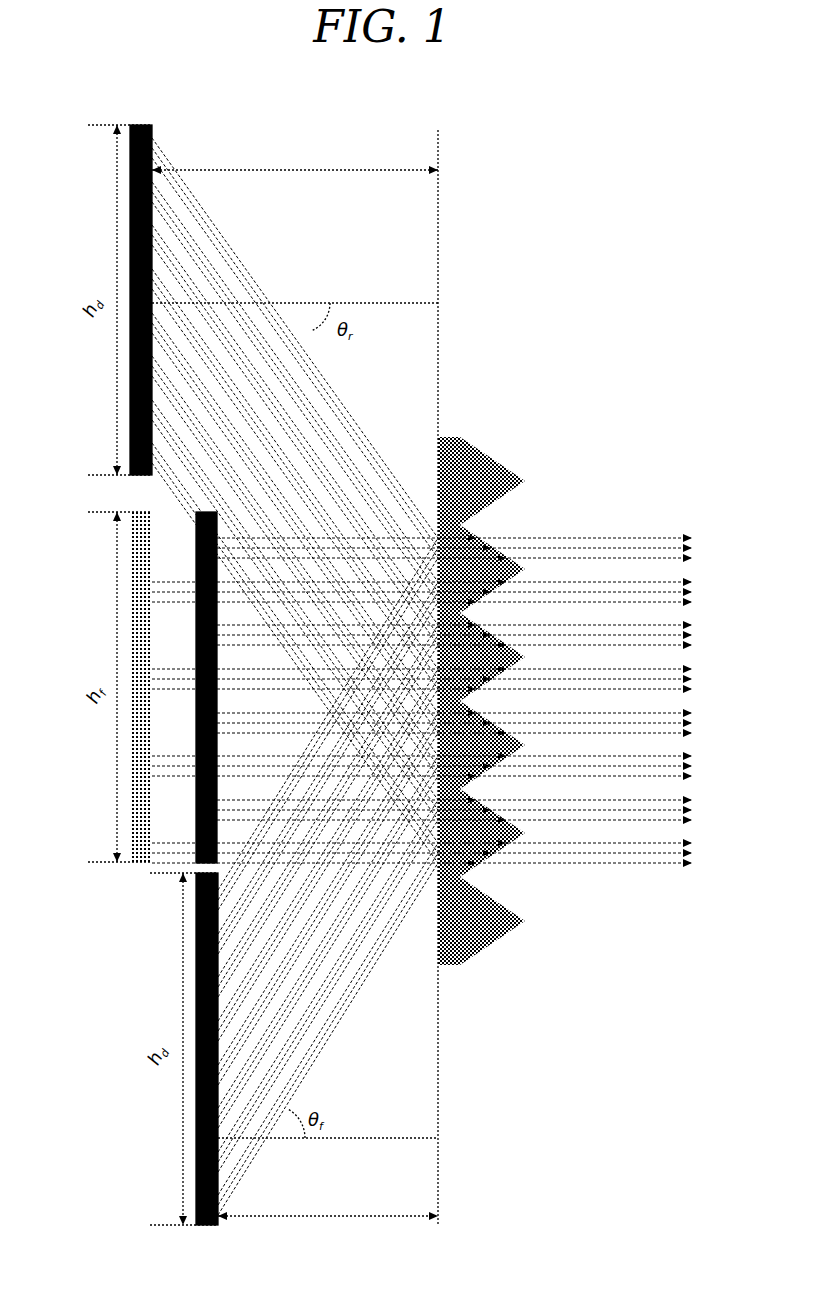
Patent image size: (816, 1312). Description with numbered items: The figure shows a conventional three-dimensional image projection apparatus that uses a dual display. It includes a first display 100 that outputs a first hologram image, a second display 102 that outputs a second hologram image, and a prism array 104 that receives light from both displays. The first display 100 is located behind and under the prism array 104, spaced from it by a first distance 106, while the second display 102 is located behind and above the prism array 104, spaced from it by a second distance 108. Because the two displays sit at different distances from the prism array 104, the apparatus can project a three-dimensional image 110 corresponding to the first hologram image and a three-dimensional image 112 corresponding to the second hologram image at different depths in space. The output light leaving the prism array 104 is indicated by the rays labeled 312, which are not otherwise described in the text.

The first display 100 is at (200, 1150).
The second display 102 is at (138, 387).
The prism array 104 is at (493, 935).
The first distance 106 is at (326, 1218).
The second distance 108 is at (296, 136).
The 3D image corresponding to the first hologram image 110 is at (205, 800).
The 3D image corresponding to the second hologram image 112 is at (135, 722).
The output light beams 312 is at (603, 866).